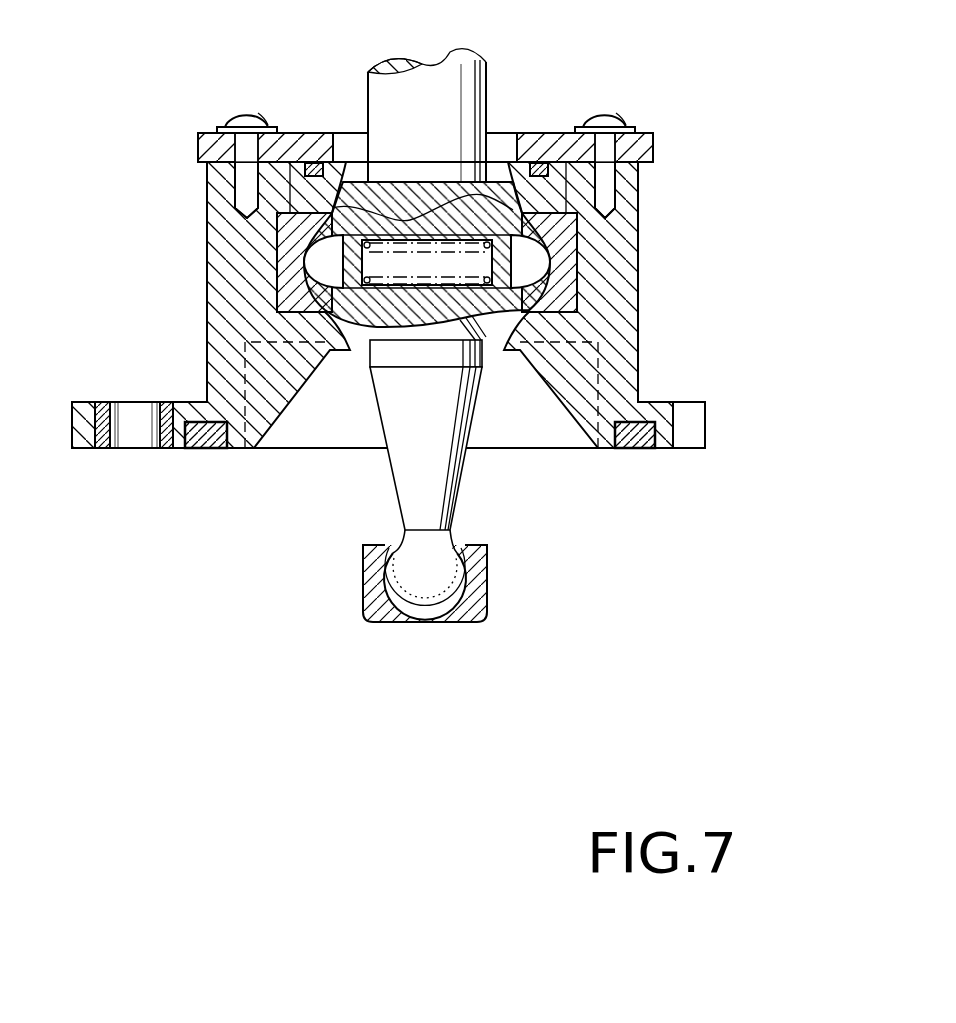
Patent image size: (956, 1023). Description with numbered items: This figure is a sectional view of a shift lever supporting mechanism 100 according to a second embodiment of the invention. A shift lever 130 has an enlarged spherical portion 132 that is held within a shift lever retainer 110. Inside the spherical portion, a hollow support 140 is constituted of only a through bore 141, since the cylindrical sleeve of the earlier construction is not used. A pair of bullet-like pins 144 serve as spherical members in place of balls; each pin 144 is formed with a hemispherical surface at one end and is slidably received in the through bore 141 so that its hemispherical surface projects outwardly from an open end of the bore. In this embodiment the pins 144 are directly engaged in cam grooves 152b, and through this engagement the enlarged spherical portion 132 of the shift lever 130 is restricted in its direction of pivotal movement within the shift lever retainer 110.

The shift lever supporting mechanism 100 is at (715, 181).
The shift lever retainer 110 is at (628, 362).
The shift lever 130 is at (448, 72).
The enlarged spherical portion 132 is at (404, 300).
The hollow support 140 is at (447, 297).
The through bore 141 is at (407, 237).
The bullet-like pin 144 is at (330, 270).
The cam groove 152b is at (330, 225).